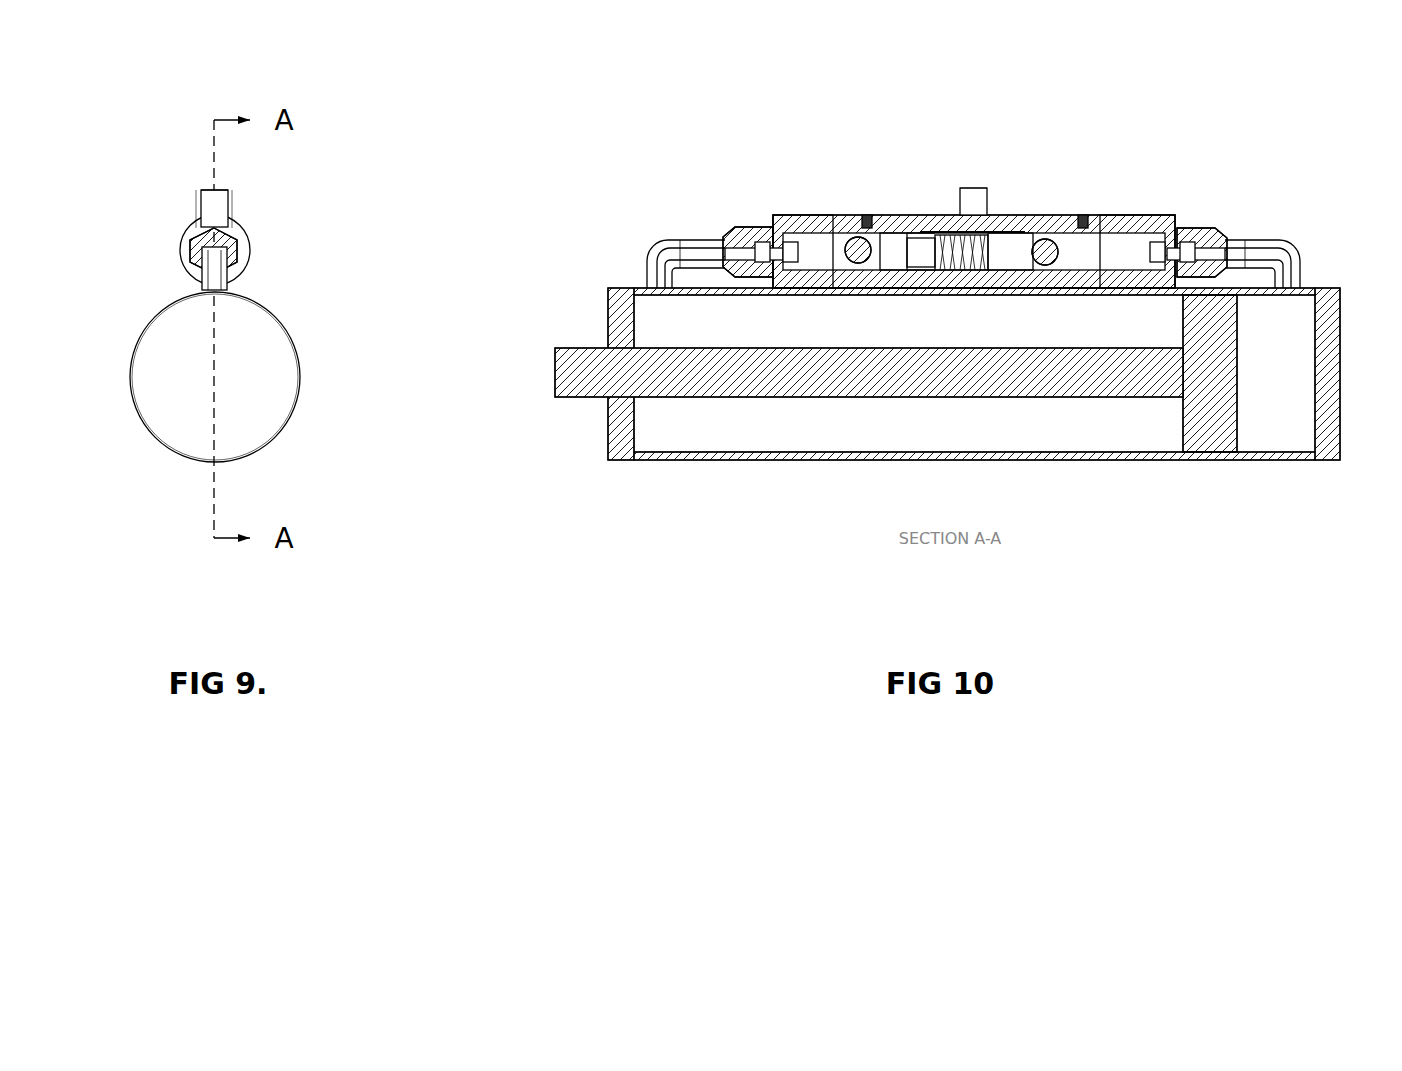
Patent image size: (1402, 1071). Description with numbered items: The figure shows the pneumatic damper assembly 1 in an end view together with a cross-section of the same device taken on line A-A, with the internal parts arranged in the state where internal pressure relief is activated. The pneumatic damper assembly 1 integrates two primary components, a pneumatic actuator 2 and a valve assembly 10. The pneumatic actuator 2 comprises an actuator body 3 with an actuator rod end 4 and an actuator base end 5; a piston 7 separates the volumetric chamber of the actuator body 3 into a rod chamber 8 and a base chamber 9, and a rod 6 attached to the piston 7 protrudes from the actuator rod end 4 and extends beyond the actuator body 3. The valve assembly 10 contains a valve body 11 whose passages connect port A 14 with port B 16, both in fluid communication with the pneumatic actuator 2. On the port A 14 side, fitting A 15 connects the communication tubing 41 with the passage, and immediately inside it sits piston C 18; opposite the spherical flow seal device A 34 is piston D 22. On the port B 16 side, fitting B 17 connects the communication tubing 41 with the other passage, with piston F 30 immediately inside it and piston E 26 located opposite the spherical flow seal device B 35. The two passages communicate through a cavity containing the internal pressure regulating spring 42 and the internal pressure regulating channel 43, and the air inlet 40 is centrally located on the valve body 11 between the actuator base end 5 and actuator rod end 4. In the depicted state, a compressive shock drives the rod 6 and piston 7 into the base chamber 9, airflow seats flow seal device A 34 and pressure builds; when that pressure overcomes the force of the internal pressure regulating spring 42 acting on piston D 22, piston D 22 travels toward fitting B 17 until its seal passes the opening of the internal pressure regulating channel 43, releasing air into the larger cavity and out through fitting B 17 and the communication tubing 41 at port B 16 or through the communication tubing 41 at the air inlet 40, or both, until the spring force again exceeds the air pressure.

In FIG. 9, the pneumatic damper assembly 1 is at (268, 265).
In FIG. 9, the pneumatic actuator 2 is at (282, 438).
In FIG. 10, the pneumatic actuator 2 is at (785, 478).
In FIG. 9, the actuator body 3 is at (300, 383).
In FIG. 10, the actuator body 3 is at (887, 462).
In FIG. 10, the actuator rod end 4 is at (600, 425).
In FIG. 9, the actuator base end 5 is at (172, 425).
In FIG. 10, the actuator base end 5 is at (1352, 403).
In FIG. 10, the rod 6 is at (558, 345).
In FIG. 10, the piston 7 is at (1200, 413).
In FIG. 10, the rod chamber 8 is at (715, 410).
In FIG. 10, the base chamber 9 is at (1262, 410).
In FIG. 9, the valve assembly 10 is at (238, 210).
In FIG. 10, the valve assembly 10 is at (989, 184).
In FIG. 9, the valve body 11 is at (188, 228).
In FIG. 10, the valve body 11 is at (768, 210).
In FIG. 9, the port A 14 is at (222, 277).
In FIG. 10, the port A 14 is at (1283, 240).
In FIG. 9, the fitting A 15 is at (188, 255).
In FIG. 10, the fitting A 15 is at (1203, 225).
In FIG. 10, the port B 16 is at (653, 248).
In FIG. 10, the fitting B 17 is at (740, 225).
In FIG. 10, the piston C 18 is at (1130, 232).
In FIG. 10, the piston D 22 is at (1003, 232).
In FIG. 10, the piston E 26 is at (908, 235).
In FIG. 10, the piston F 30 is at (803, 222).
In FIG. 10, the flow seal device A 34 is at (1046, 240).
In FIG. 10, the flow seal device B 35 is at (843, 240).
In FIG. 9, the air inlet 40 is at (203, 186).
In FIG. 10, the air inlet 40 is at (980, 183).
In FIG. 9, the communication tubing 41 is at (196, 190).
In FIG. 10, the communication tubing 41 is at (690, 237).
In FIG. 10, the internal pressure regulating spring 42 is at (932, 222).
In FIG. 10, the internal pressure regulating channel 43 is at (950, 230).